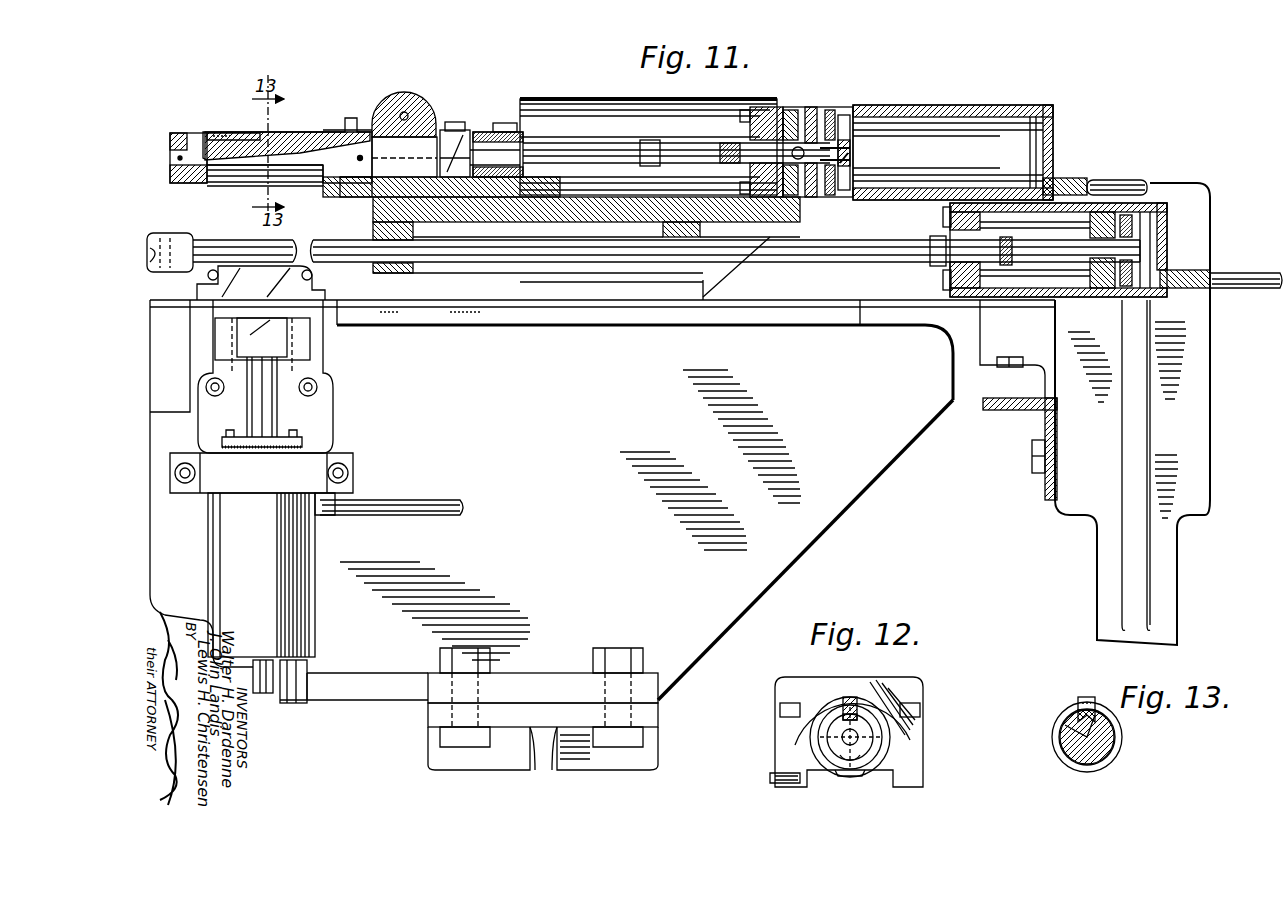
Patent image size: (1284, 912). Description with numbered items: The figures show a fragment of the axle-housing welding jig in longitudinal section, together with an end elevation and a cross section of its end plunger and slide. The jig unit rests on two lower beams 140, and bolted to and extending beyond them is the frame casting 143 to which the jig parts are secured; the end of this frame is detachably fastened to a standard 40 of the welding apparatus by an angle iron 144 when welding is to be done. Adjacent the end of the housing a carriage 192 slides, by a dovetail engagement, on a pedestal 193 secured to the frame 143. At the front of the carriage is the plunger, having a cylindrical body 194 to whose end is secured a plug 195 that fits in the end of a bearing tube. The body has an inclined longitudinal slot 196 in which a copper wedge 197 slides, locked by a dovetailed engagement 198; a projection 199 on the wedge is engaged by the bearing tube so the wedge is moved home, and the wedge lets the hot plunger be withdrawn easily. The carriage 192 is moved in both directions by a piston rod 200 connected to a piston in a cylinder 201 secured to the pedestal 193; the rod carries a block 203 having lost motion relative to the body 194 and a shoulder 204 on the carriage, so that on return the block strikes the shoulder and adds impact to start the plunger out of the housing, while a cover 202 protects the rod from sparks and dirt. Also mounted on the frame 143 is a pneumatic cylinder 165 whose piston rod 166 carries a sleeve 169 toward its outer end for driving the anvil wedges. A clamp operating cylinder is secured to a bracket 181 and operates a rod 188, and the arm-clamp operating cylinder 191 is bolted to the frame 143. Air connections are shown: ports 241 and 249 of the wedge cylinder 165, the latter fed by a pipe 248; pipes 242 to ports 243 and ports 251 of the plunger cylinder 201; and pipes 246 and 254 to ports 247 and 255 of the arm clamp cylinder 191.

In FIG. 11, the standard 40 is at (1130, 510).
In FIG. 11, the lower beam 140 is at (508, 757).
In FIG. 11, the frame casting 143 is at (842, 480).
In FIG. 11, the angle iron 144 is at (1045, 420).
In FIG. 11, the pneumatic cylinder 165 is at (1022, 298).
In FIG. 11, the piston rod 166 is at (287, 244).
In FIG. 11, the sleeve 169 is at (184, 268).
In FIG. 11, the bracket 181 is at (322, 447).
In FIG. 11, the rod 188 is at (275, 426).
In FIG. 11, the operating cylinder 191 is at (283, 563).
In FIG. 11, the carriage 192 is at (360, 198).
In FIG. 12, the carriage 192 is at (910, 751).
In FIG. 11, the pedestal 193 is at (640, 281).
In FIG. 11, the cylindrical body 194 is at (231, 179).
In FIG. 12, the cylindrical body 194 is at (823, 760).
In FIG. 13, the cylindrical body 194 is at (1117, 750).
In FIG. 11, the plug 195 is at (197, 178).
In FIG. 12, the plug 195 is at (833, 747).
In FIG. 11, the inclined longitudinal slot 196 is at (300, 141).
In FIG. 11, the wedge 197 is at (213, 131).
In FIG. 12, the wedge 197 is at (857, 711).
In FIG. 13, the wedge 197 is at (1113, 717).
In FIG. 11, the dovetailed engagement 198 is at (273, 140).
In FIG. 13, the dovetailed engagement 198 is at (1067, 750).
In FIG. 11, the projection 199 is at (353, 121).
In FIG. 12, the projection 199 is at (847, 697).
In FIG. 13, the projection 199 is at (1086, 697).
In FIG. 11, the piston rod 200 is at (608, 150).
In FIG. 11, the cylinder 201 is at (950, 106).
In FIG. 11, the cover 202 is at (750, 96).
In FIG. 11, the block 203 is at (457, 141).
In FIG. 11, the shoulder 204 is at (500, 126).
In FIG. 11, the port 241 is at (953, 313).
In FIG. 11, the pipe 242 is at (1125, 183).
In FIG. 11, the port 243 is at (1060, 180).
In FIG. 11, the pipe 246 is at (263, 696).
In FIG. 11, the port 247 is at (283, 667).
In FIG. 11, the pipe 248 is at (1243, 292).
In FIG. 11, the port 249 is at (1180, 270).
In FIG. 11, the port 251 is at (800, 120).
In FIG. 11, the pipe 254 is at (440, 503).
In FIG. 11, the port 255 is at (327, 513).